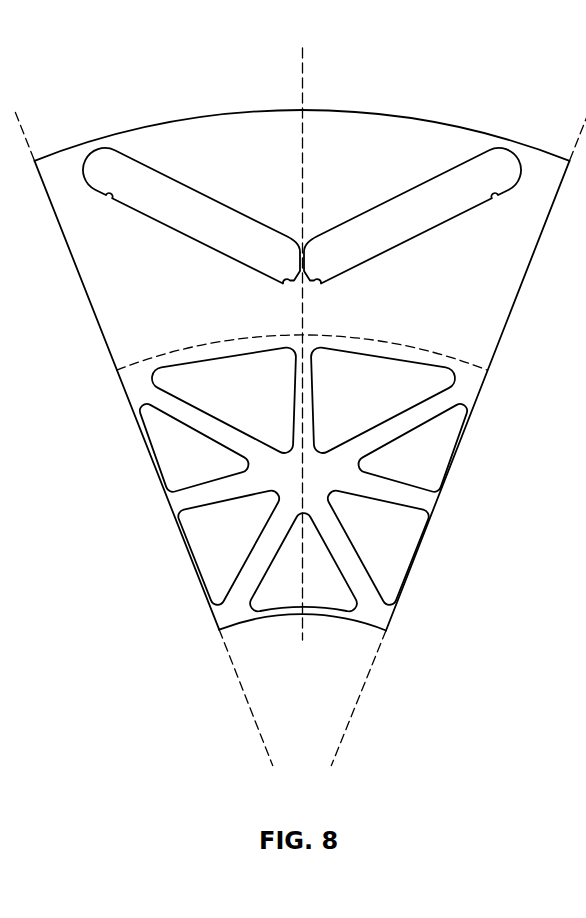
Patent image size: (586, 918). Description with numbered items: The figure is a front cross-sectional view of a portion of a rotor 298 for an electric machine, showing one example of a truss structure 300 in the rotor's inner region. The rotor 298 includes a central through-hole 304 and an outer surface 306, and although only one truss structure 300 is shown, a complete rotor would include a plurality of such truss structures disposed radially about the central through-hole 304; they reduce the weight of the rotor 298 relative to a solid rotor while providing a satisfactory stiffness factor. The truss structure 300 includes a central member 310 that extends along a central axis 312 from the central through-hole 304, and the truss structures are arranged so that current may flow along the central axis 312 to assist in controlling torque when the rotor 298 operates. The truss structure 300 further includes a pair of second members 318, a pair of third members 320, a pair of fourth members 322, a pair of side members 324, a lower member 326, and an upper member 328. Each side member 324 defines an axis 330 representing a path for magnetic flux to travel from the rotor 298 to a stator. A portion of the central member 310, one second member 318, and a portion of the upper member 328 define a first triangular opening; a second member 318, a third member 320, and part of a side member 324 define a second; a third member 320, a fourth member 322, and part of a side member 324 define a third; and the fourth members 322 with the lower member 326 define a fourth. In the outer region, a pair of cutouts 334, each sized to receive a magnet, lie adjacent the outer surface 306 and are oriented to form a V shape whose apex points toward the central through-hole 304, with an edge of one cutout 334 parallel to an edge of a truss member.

The rotor 298 is at (378, 109).
The truss structure 300 is at (397, 344).
The central through-hole 304 is at (312, 615).
The outer surface 306 is at (204, 112).
The central member 310 is at (307, 395).
The central axis 312 is at (305, 63).
The second members 318 is at (205, 423).
The third members 320 is at (210, 492).
The fourth members 322 is at (255, 567).
The side members 324 is at (157, 476).
The lower member 326 is at (263, 613).
The upper member 328 is at (250, 342).
The axis 330 is at (20, 126).
The cutouts 334 is at (200, 188).